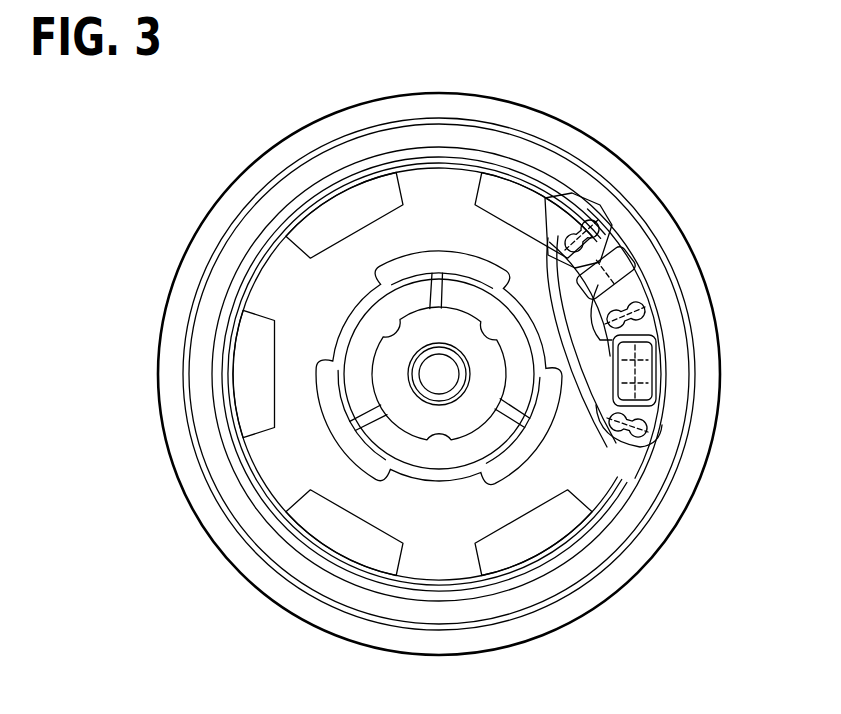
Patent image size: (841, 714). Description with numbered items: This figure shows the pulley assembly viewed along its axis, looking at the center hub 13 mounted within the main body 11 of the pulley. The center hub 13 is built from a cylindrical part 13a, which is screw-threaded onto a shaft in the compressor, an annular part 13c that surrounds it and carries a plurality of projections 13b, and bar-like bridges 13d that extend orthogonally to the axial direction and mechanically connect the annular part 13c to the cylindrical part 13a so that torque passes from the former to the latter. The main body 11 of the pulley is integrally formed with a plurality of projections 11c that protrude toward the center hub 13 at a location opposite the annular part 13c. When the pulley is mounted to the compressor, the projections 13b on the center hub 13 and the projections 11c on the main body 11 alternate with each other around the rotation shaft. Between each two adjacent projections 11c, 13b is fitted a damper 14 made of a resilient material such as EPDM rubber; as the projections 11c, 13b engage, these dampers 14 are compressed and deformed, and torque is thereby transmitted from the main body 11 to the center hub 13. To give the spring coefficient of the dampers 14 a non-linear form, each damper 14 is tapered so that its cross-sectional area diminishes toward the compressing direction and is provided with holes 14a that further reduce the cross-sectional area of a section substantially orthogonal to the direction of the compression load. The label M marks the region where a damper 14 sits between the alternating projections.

The main body 11 is at (359, 118).
The projections 11c is at (660, 368).
The center hub 13 is at (520, 415).
The cylindrical part 13a is at (520, 490).
The projections 13b is at (605, 255).
The annular part 13c is at (467, 507).
The bar-like bridges 13d is at (475, 410).
The damper 14 is at (573, 212).
The holes 14a is at (580, 228).
The mass M is at (543, 203).